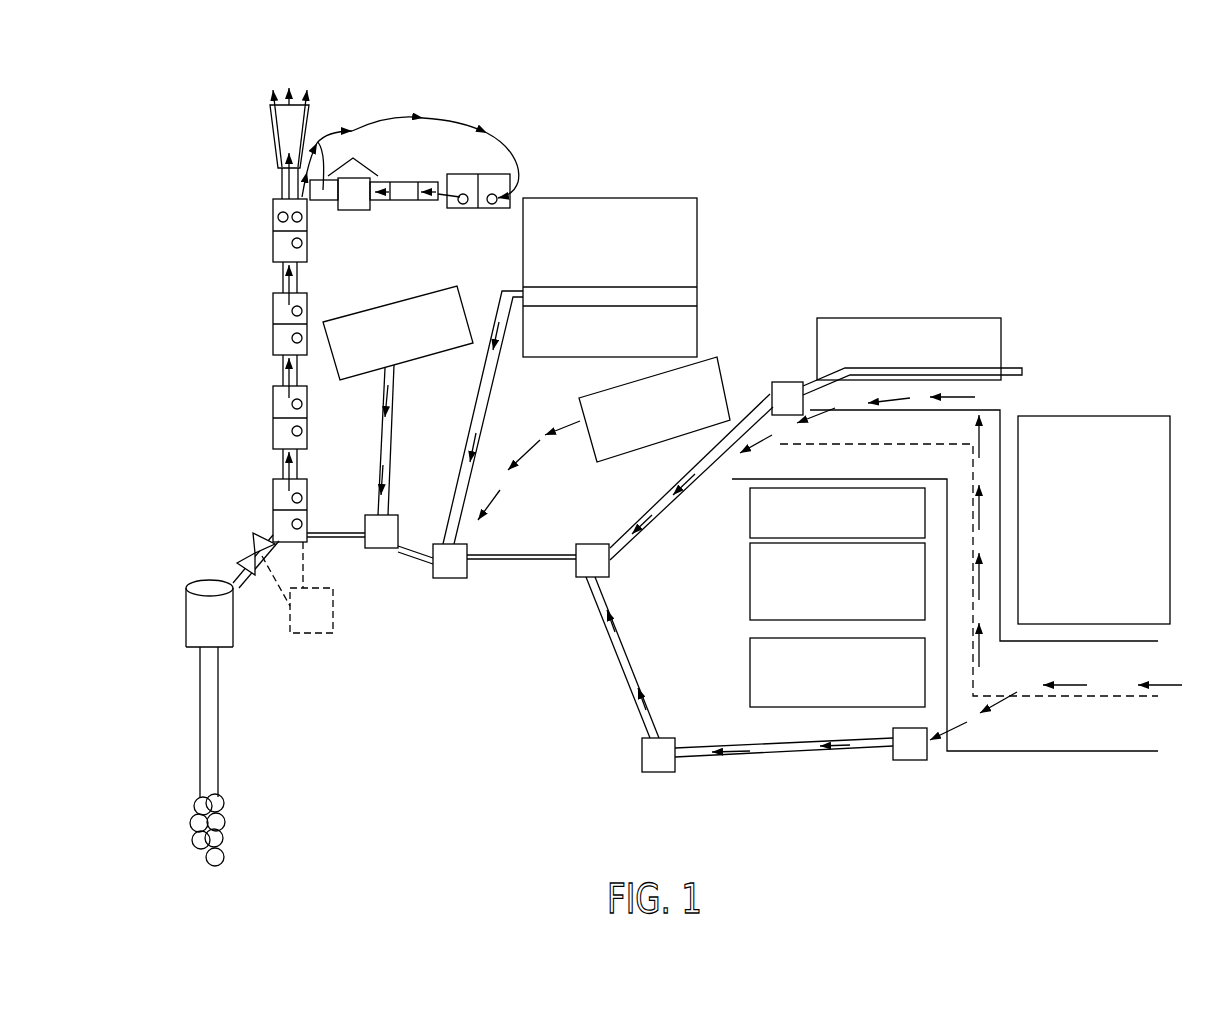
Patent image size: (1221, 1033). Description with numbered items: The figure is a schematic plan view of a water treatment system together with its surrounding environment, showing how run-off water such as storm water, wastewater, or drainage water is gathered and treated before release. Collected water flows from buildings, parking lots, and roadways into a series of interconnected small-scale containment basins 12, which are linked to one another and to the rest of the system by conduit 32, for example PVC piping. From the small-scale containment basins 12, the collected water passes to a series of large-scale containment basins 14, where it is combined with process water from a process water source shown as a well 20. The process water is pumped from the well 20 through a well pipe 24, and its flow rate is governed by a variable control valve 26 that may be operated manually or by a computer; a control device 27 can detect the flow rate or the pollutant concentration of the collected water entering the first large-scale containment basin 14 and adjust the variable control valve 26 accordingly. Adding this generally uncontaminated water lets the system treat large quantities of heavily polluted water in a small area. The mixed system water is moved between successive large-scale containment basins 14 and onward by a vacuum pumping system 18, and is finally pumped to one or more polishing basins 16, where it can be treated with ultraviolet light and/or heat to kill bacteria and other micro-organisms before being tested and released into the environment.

The small-scale containment basin 12 is at (398, 521).
The large-scale containment basin 14 is at (273, 246).
The polishing basin 16 is at (402, 200).
The vacuum pumping system 18 is at (354, 210).
The well 20 is at (223, 633).
The well pipe 24 is at (236, 577).
The variable control valve 26 is at (250, 549).
The control device 27 is at (310, 633).
The conduit 32 is at (460, 92).